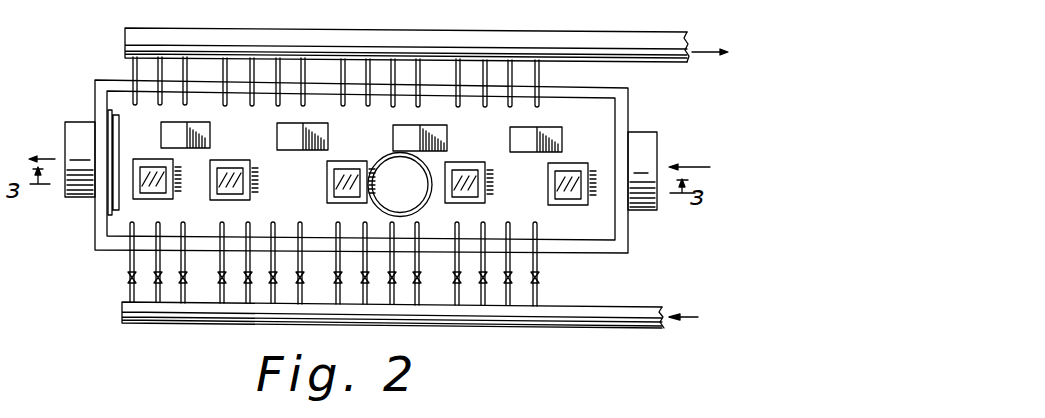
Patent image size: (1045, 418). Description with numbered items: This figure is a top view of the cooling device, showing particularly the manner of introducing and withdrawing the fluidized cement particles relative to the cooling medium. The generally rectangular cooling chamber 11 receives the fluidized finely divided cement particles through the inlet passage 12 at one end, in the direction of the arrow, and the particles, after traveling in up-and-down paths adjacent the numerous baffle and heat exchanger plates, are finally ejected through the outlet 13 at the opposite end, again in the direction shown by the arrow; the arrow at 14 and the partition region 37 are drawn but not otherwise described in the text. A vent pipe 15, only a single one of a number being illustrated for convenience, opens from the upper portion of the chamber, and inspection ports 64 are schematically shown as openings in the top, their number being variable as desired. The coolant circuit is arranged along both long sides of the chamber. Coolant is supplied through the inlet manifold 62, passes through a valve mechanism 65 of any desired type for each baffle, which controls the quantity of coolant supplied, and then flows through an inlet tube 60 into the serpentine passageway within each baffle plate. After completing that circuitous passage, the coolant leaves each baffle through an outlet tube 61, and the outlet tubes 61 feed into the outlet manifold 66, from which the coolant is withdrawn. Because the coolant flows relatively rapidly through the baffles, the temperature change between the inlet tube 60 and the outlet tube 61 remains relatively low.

The cooling chamber 11 is at (113, 242).
The inlet passage 12 is at (642, 132).
The outlet 13 is at (83, 122).
The direction of movement 14 is at (710, 27).
The vent pipe 15 is at (428, 199).
The inner frame 37 is at (580, 225).
The inlet tube 60 is at (130, 257).
The outlet tube 61 is at (132, 77).
The inlet manifold 62 is at (562, 315).
The inspection ports 64 is at (142, 185).
The valve mechanism 65 is at (127, 277).
The outlet manifold 66 is at (538, 45).